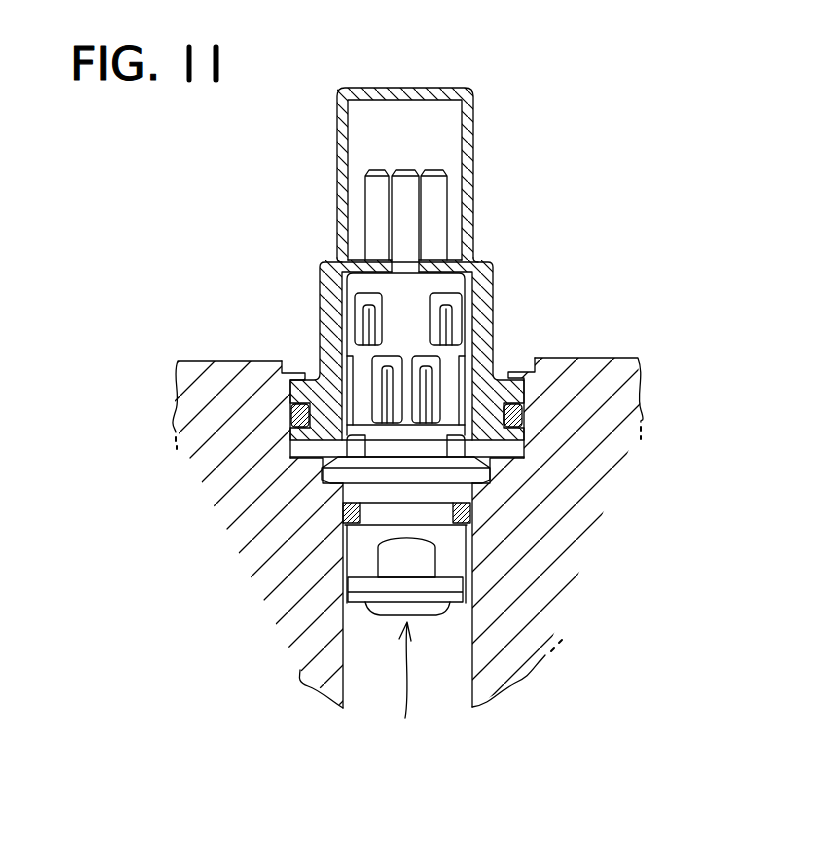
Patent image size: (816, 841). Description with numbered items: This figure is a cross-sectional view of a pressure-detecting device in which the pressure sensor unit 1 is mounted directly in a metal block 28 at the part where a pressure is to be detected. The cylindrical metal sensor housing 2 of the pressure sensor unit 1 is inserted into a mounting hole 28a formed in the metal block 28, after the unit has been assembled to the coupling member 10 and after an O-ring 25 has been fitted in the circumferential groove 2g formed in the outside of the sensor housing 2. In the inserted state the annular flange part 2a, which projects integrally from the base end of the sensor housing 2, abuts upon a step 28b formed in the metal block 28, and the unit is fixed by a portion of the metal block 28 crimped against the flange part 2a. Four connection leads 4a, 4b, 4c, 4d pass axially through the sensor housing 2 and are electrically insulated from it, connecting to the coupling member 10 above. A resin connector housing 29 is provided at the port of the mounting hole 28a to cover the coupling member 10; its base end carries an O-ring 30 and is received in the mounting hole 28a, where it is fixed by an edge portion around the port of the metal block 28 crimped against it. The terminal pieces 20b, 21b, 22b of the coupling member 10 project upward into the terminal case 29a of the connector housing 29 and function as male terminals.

The pressure sensor unit 1 is at (405, 685).
The sensor housing 2 is at (365, 603).
The flange part 2a is at (324, 484).
The circumferential groove 2g is at (423, 521).
The connection lead 4a is at (390, 376).
The connection lead 4b is at (430, 377).
The connection lead 4c is at (372, 312).
The connection lead 4d is at (442, 310).
The coupling member 10 is at (460, 350).
The terminal piece 20b is at (378, 170).
The terminal piece 21b is at (436, 170).
The terminal piece 22b is at (407, 170).
The O-ring 25 is at (470, 510).
The metal block 28 is at (614, 358).
The mounting hole 28a is at (472, 707).
The step 28b is at (489, 477).
The connector housing 29 is at (493, 262).
The terminal case 29a is at (474, 154).
The O-ring 30 is at (522, 412).